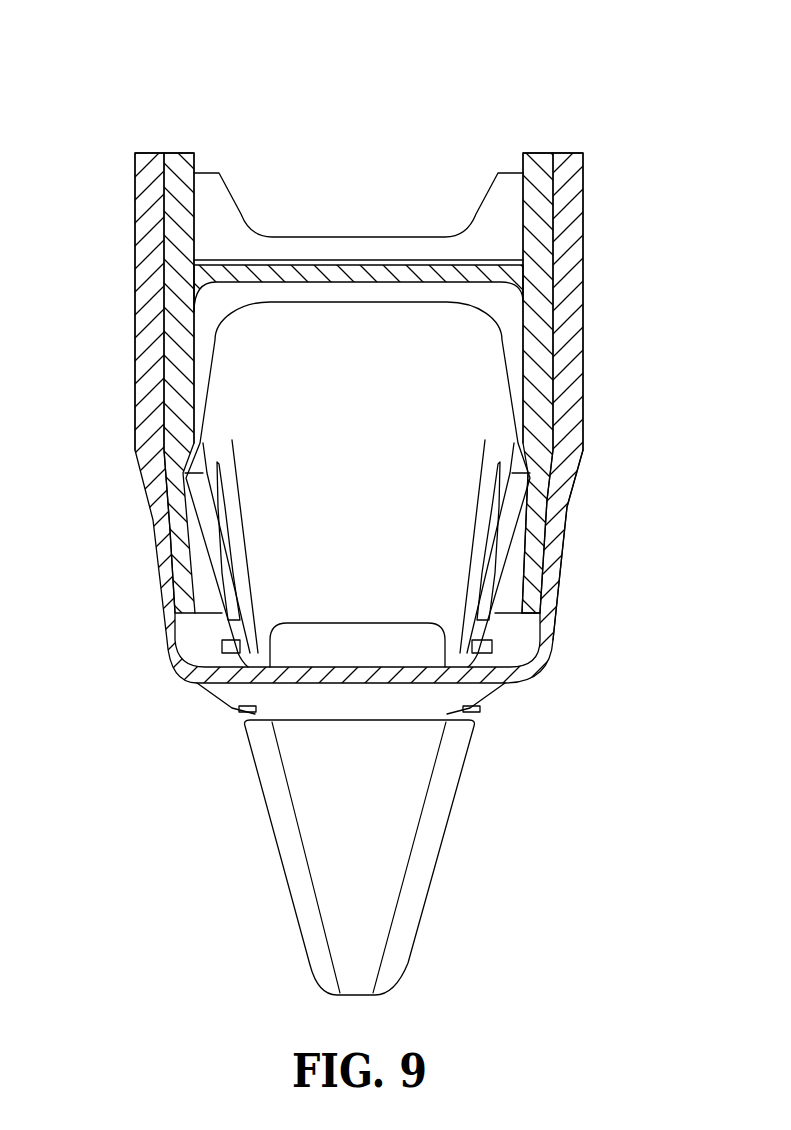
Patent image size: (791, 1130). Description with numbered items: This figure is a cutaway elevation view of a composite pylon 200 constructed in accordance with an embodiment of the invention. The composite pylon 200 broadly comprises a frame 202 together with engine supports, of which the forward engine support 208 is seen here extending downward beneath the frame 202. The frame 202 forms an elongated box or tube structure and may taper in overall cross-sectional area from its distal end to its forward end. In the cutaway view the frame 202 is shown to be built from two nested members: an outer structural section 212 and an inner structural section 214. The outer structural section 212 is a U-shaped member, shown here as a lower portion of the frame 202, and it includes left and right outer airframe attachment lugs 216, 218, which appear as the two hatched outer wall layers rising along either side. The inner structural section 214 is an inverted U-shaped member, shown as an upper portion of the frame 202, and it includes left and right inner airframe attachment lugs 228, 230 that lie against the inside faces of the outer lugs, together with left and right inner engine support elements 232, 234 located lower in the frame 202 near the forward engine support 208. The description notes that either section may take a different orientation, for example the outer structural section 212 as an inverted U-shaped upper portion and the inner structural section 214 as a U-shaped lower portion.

The composite pylon 200 is at (614, 80).
The frame 202 is at (640, 380).
The forward engine support 208 is at (457, 813).
The outer structural section 212 is at (578, 512).
The inner structural section 214 is at (535, 565).
The left outer airframe attachment lug 216 is at (145, 202).
The right outer airframe attachment lug 218 is at (572, 197).
The left inner airframe attachment lug 228 is at (175, 240).
The right inner airframe attachment lug 230 is at (543, 230).
The left inner engine support element 232 is at (235, 593).
The right inner engine support element 234 is at (480, 598).